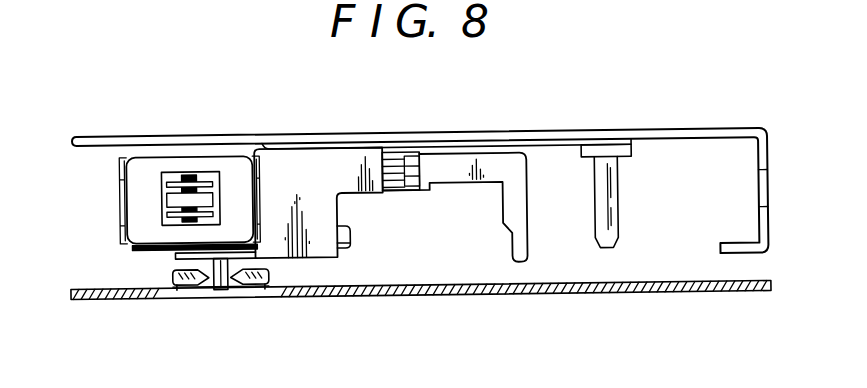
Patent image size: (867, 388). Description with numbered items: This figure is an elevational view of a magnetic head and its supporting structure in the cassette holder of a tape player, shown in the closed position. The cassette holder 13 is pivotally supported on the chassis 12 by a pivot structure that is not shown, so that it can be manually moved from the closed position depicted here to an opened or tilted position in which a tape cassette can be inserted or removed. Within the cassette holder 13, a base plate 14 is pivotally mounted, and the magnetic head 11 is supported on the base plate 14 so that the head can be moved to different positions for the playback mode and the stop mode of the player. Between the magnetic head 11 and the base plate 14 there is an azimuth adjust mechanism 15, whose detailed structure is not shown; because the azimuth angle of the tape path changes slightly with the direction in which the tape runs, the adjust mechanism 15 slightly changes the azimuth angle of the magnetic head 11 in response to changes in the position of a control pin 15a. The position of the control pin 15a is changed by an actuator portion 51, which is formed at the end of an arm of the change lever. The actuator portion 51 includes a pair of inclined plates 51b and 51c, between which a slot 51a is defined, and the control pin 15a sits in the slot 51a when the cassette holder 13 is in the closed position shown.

The magnetic head 11 is at (183, 162).
The chassis 12 is at (570, 296).
The cassette holder 13 is at (677, 131).
The base plate 14 is at (446, 146).
The azimuth adjust mechanism 15 is at (243, 259).
The control pin 15a is at (217, 286).
The actuator portion 51 is at (172, 275).
The slot 51a is at (225, 284).
The inclined plate 51b is at (247, 282).
The inclined plate 51c is at (183, 288).